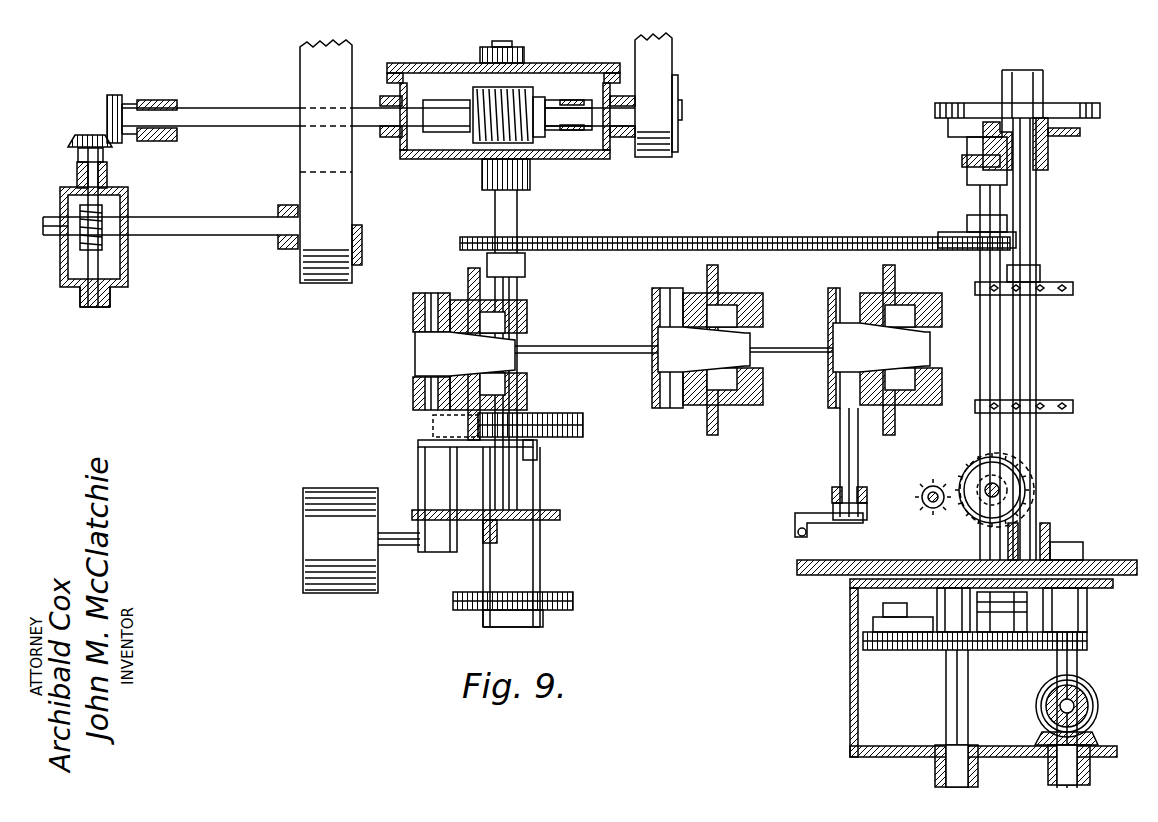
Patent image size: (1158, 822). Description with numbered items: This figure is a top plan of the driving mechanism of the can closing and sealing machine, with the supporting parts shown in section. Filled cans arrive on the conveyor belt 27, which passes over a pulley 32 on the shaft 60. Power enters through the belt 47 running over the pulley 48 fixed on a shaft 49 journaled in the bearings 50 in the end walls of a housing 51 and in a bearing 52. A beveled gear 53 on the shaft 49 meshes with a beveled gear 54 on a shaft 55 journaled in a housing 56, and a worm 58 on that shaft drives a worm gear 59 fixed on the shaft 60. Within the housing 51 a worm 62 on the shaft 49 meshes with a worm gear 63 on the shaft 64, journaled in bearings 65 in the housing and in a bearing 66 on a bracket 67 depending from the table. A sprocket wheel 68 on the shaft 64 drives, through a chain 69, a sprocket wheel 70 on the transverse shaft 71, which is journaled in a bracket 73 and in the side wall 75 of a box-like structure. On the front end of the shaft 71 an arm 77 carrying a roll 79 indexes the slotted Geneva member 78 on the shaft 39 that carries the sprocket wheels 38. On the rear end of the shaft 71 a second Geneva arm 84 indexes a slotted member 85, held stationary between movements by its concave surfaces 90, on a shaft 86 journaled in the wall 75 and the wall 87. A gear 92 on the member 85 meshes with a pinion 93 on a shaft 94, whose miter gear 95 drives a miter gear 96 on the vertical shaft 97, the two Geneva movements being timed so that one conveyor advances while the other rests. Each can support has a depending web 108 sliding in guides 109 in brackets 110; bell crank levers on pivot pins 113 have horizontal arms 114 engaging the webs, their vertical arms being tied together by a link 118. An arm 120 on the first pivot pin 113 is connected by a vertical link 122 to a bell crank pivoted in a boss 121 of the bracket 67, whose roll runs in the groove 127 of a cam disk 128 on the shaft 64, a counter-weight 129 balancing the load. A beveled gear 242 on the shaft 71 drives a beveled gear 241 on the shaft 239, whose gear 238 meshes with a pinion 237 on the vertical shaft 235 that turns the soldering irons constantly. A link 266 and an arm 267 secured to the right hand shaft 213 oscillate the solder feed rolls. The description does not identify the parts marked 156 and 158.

The conveyor belt 27 is at (318, 156).
The pulley 32 is at (362, 243).
The sprocket wheels 38 is at (1050, 284).
The shaft 39 is at (1036, 340).
The belt 47 is at (662, 68).
The pulley 48 is at (680, 92).
The shaft 49 is at (222, 108).
The bearings 50 is at (387, 150).
The housing 51 is at (458, 159).
The bearing 52 is at (162, 141).
The beveled gear 53 is at (125, 98).
The beveled gear 54 is at (104, 150).
The shaft 55 is at (78, 285).
The housing 56 is at (120, 213).
The worm 58 is at (105, 248).
The worm gear 59 is at (75, 205).
The shaft 60 is at (243, 236).
The worm 62 is at (476, 95).
The worm gear 63 is at (575, 100).
The shaft 64 is at (518, 218).
The bearings 65 is at (525, 58).
The bearing 66 is at (540, 560).
The bracket 67 is at (560, 515).
The sprocket wheel 68 is at (528, 260).
The chain 69 is at (710, 237).
The sprocket wheel 70 is at (950, 232).
The shaft 71 is at (980, 333).
The bracket 73 is at (962, 160).
The side wall 75 is at (967, 559).
The arm 77 is at (955, 128).
The slotted member 78 is at (985, 104).
The roll 79 is at (948, 104).
The arm 84 is at (1018, 612).
The slotted member 85 is at (870, 628).
The shaft 86 is at (946, 705).
The wall 87 is at (918, 758).
The concave surfaces 90 is at (884, 608).
The gear 92 is at (890, 634).
The pinion 93 is at (1087, 640).
The shaft 94 is at (1070, 668).
The miter gear 95 is at (1090, 740).
The miter gear 96 is at (1040, 700).
The vertically arranged shaft 97 is at (1048, 716).
The depending web 108 is at (528, 380).
The vertically arranged guides 109 is at (528, 302).
The brackets 110 is at (470, 290).
The pivot pins 113 is at (415, 306).
The horizontally arranged arm 114 is at (440, 353).
The link 118 is at (598, 338).
The arm 120 is at (418, 443).
The boss 121 is at (425, 475).
The vertically arranged link 122 is at (538, 455).
The groove 127 is at (433, 420).
The cam disk 128 is at (583, 423).
The counter-weight 129 is at (361, 540).
The gear 156 is at (574, 601).
The flange 158 is at (560, 590).
The right hand shaft 213 is at (840, 437).
The vertically arranged shaft 235 is at (928, 490).
The pinion 237 is at (925, 508).
The gear 238 is at (990, 524).
The shaft 239 is at (1000, 490).
The beveled gear 241 is at (1008, 484).
The beveled gear 242 is at (968, 456).
The link 266 is at (796, 538).
The arm 267 is at (833, 500).